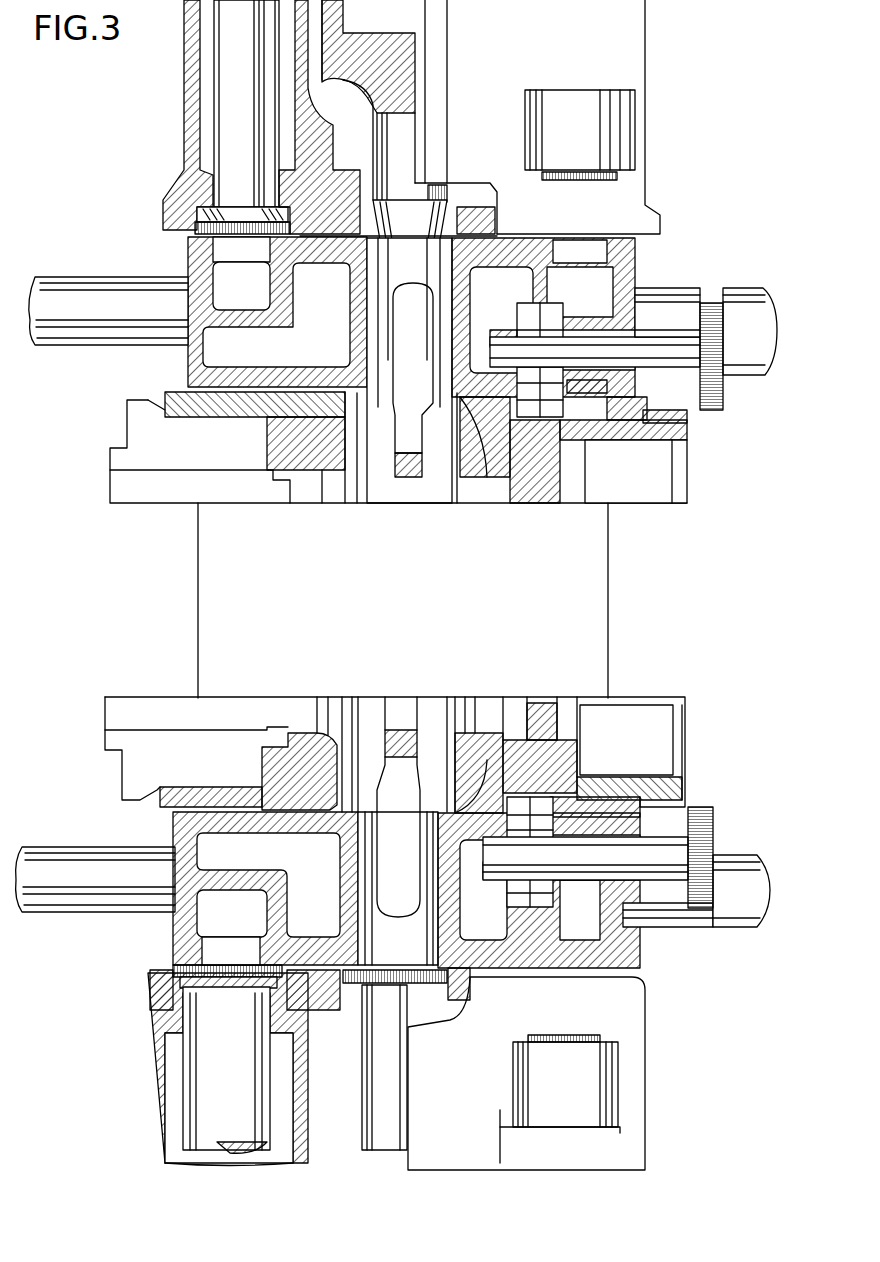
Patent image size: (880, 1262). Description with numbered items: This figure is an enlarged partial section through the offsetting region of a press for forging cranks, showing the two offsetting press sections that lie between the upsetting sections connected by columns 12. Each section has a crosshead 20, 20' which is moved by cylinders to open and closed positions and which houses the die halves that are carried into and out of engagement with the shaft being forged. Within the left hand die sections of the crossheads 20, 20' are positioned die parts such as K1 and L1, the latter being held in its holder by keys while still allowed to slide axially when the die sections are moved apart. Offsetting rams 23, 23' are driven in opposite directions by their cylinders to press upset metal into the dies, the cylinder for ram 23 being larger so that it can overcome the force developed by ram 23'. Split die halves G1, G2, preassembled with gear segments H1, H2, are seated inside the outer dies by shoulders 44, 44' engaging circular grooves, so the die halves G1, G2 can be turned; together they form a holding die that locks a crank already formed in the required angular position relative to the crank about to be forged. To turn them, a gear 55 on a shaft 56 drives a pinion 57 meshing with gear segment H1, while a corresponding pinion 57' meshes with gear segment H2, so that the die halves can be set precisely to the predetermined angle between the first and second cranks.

The crosshead 20 is at (211, 312).
The column 12 is at (62, 312).
The offsetting ram 23 is at (347, 370).
The die part K1 is at (147, 425).
The die part L1 is at (288, 432).
The shoulder 44 is at (510, 466).
The split die half G1 is at (550, 480).
The gear segment H1 is at (555, 428).
The pinion 57 is at (521, 349).
The shaft 56 is at (645, 352).
The gear 55 is at (708, 310).
The shoulder 44' is at (495, 743).
The split die half G2 is at (546, 730).
The gear segment H2 is at (500, 778).
The offsetting ram 23' is at (332, 831).
The crosshead 20' is at (226, 888).
The pinion 57' is at (538, 867).